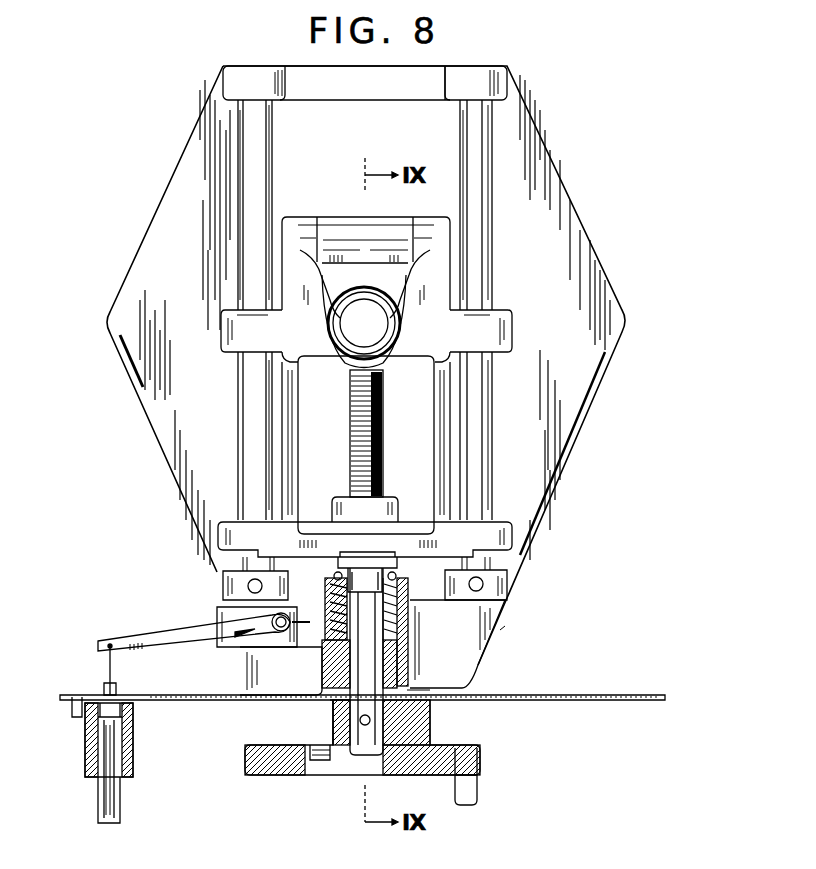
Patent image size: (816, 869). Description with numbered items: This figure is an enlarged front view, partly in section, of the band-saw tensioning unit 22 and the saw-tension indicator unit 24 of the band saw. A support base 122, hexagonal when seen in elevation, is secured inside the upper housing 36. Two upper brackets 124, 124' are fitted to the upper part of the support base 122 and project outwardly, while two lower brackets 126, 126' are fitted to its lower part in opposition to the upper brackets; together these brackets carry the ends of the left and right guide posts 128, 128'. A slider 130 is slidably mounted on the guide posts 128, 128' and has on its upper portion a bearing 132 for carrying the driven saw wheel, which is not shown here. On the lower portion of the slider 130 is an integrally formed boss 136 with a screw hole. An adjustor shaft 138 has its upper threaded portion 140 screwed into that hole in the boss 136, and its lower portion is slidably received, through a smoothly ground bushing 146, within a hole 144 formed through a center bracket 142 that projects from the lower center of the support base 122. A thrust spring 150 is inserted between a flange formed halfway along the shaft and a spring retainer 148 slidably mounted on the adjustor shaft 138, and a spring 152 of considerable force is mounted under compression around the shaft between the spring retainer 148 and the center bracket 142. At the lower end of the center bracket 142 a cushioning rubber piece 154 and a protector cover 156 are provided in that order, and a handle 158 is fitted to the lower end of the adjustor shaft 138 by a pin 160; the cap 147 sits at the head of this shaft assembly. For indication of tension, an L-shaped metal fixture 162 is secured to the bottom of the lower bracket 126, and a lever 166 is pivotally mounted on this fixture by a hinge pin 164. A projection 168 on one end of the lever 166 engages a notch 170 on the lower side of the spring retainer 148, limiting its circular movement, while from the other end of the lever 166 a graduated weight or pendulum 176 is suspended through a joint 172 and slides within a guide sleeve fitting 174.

The band-saw tensioning unit 22 is at (553, 636).
The saw-tension indicator unit 24 is at (180, 786).
The upper housing 36 is at (568, 697).
The support base 122 is at (580, 262).
The upper bracket 124 is at (365, 83).
The upper bracket 124' is at (445, 83).
The lower bracket 126 is at (226, 578).
The lower bracket 126' is at (504, 578).
The guide post 128 is at (275, 310).
The guide post 128' is at (500, 310).
The slider 130 is at (458, 423).
The bearing 132 is at (372, 310).
The boss 136 is at (398, 510).
The adjustor shaft 138 is at (410, 680).
The upper threaded portion 140 is at (383, 442).
The center bracket 142 is at (410, 658).
The hole 144 is at (383, 682).
The bushing 146 is at (410, 700).
The cap 147 is at (343, 562).
The spring retainer 148 is at (418, 614).
The thrust spring 150 is at (390, 578).
The spring 152 is at (395, 640).
The cushioning rubber piece 154 is at (262, 692).
The protector cover 156 is at (332, 710).
The handle 158 is at (382, 763).
The pin 160 is at (370, 720).
The L-shaped metal fixture 162 is at (218, 643).
The hinge pin 164 is at (272, 615).
The lever 166 is at (235, 637).
The projection 168 is at (318, 598).
The notch 170 is at (318, 628).
The joint 172 is at (106, 688).
The guide sleeve fitting 174 is at (132, 757).
The graduated weight or pendulum 176 is at (120, 810).